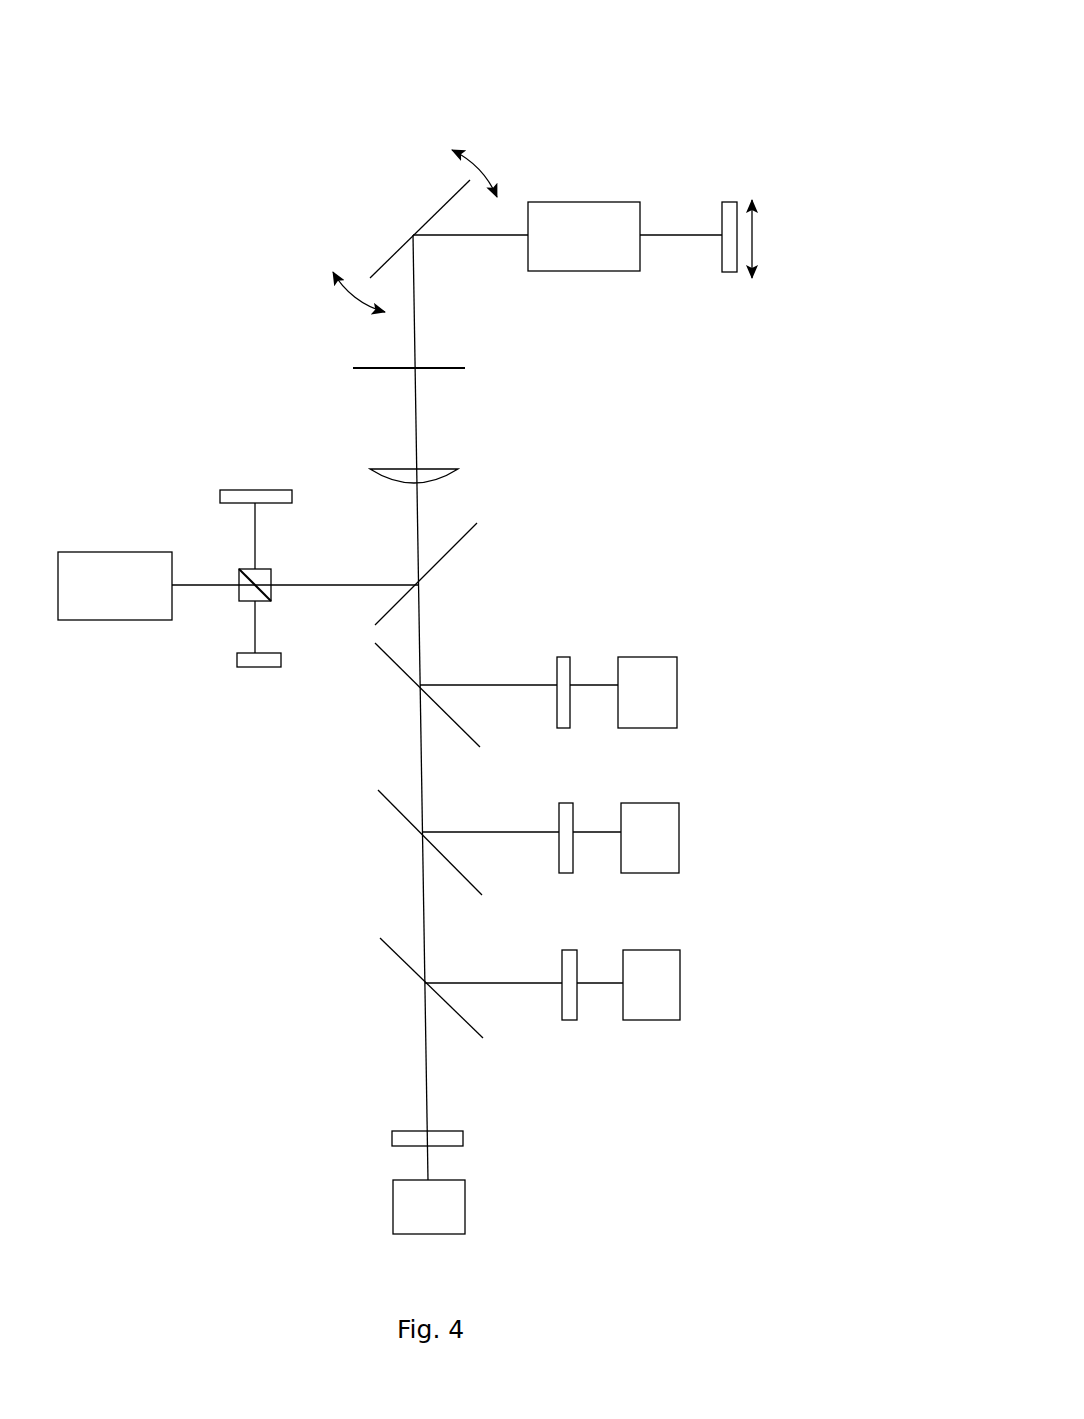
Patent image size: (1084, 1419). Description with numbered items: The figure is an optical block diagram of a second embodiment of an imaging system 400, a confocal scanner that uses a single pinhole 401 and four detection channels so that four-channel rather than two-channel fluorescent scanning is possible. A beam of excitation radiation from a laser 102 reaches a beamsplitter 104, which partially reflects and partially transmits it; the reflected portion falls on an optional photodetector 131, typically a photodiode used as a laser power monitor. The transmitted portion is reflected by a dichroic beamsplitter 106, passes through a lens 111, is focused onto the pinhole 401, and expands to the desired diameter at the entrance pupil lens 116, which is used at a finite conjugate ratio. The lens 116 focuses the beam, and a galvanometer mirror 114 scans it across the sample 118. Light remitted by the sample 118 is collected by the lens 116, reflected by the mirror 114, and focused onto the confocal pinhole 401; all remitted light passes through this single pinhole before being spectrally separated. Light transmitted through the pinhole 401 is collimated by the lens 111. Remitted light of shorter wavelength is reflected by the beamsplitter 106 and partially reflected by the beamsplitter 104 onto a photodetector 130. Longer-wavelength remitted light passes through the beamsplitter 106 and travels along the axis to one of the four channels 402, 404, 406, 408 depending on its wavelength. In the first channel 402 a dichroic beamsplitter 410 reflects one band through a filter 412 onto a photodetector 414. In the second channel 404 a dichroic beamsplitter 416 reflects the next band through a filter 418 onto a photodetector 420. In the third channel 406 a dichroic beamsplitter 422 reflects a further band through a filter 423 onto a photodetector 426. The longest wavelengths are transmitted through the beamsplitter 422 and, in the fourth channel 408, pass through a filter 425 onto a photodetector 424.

The imaging system 400 is at (723, 70).
The laser 102 is at (97, 538).
The beamsplitter 104 is at (227, 608).
The photodetector 130 is at (268, 480).
The photodetector 131 is at (243, 678).
The dichroic beamsplitter 106 is at (473, 550).
The lens 111 is at (467, 462).
The pinhole 401 is at (487, 362).
The galvanometer mirror 114 is at (382, 233).
The lens 116 is at (587, 183).
The sample 118 is at (728, 188).
The dichroic beamsplitter 410 is at (440, 675).
The filter 412 is at (577, 648).
The photodetector 414 is at (683, 647).
The channel 402 is at (752, 690).
The dichroic beamsplitter 416 is at (442, 823).
The filter 418 is at (580, 807).
The photodetector 420 is at (685, 800).
The channel 404 is at (755, 842).
The dichroic beamsplitter 422 is at (445, 972).
The filter 423 is at (583, 967).
The photodetector 426 is at (687, 953).
The channel 406 is at (757, 988).
The filter 425 is at (448, 1118).
The photodetector 424 is at (477, 1210).
The channel 408 is at (388, 1205).